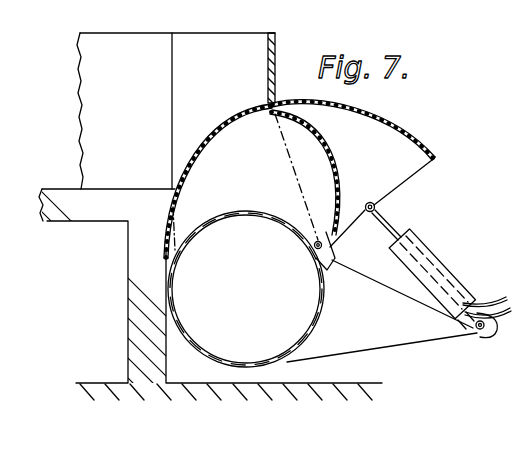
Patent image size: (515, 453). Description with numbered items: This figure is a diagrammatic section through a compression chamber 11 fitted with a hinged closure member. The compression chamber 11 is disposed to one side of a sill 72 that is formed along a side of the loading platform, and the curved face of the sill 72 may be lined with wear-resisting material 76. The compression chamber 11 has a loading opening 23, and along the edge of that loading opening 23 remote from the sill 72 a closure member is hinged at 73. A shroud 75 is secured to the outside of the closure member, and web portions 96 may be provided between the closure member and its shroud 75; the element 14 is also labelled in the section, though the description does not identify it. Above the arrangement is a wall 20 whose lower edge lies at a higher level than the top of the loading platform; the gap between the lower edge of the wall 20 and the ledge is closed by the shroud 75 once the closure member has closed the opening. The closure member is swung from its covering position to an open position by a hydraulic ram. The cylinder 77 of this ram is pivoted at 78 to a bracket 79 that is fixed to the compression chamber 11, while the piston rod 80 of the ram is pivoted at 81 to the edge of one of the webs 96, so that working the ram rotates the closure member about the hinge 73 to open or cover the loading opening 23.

The sill 72 is at (163, 200).
The wall 20 is at (275, 73).
The hood 14 is at (325, 140).
The shroud 75 is at (343, 104).
The hinge 73 is at (417, 165).
The web portions 96 is at (441, 154).
The pivot 81 is at (376, 206).
The piston rod 80 is at (390, 220).
The cylinder 77 is at (423, 248).
The pivot 78 is at (470, 340).
The bracket 79 is at (393, 337).
The compression chamber 11 is at (183, 337).
The loading opening 23 is at (240, 210).
The wear-resisting material 76 is at (165, 235).